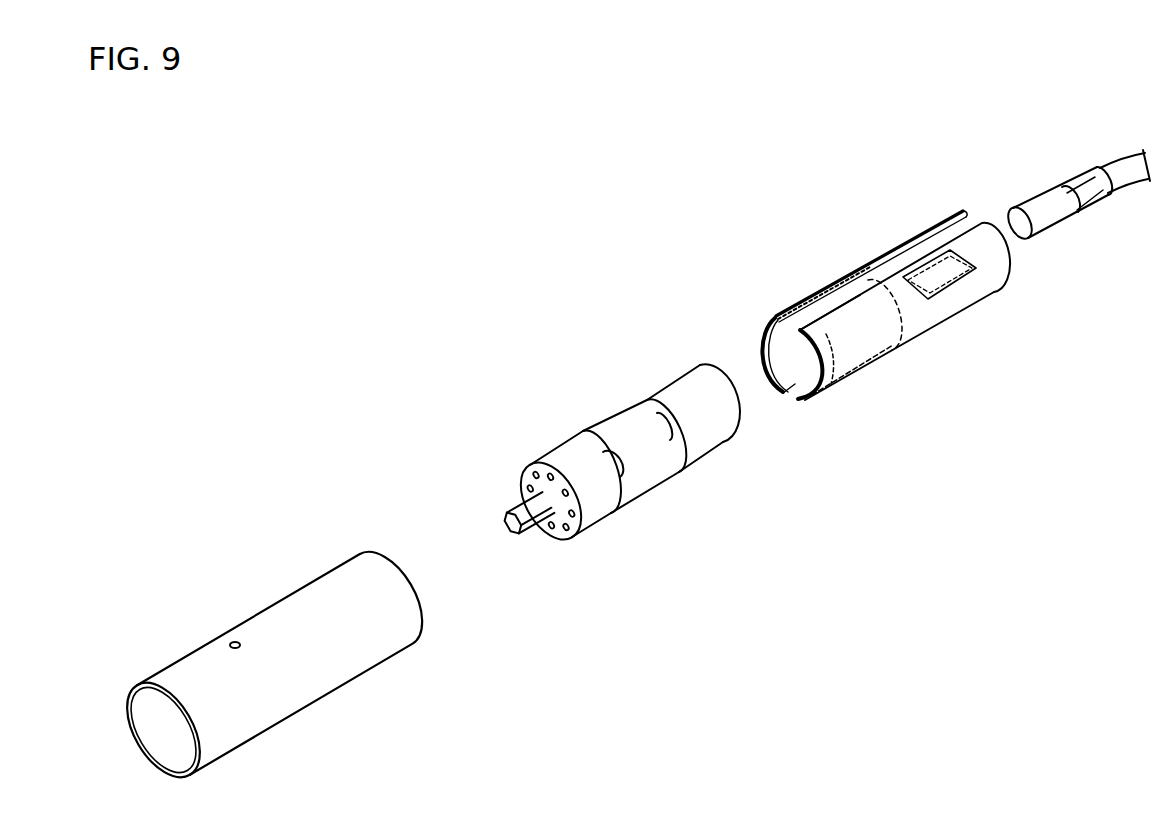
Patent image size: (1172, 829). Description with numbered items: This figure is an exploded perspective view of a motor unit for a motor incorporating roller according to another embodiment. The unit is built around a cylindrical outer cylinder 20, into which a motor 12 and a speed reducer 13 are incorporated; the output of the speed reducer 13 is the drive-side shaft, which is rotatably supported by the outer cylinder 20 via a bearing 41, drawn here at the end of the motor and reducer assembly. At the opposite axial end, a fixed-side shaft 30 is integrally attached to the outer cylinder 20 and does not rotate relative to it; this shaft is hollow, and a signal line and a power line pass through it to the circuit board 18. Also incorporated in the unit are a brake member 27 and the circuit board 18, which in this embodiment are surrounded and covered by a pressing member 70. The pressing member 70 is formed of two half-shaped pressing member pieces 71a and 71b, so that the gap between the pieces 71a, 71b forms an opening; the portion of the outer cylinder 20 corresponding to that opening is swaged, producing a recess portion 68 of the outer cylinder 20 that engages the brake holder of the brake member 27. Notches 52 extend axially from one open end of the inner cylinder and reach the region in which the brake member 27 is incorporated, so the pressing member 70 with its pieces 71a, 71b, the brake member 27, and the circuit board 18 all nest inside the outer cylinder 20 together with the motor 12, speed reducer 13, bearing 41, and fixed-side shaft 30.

The outer cylinder 20 is at (323, 587).
The recess portion 68 is at (235, 642).
The bearing 41 is at (592, 512).
The speed reducer 13 is at (657, 470).
The motor 12 is at (725, 428).
The brake member 27 is at (853, 355).
The notch 52 is at (818, 307).
The circuit board 18 is at (946, 262).
The pressing member 70 is at (907, 250).
The pressing member piece 71a is at (760, 334).
The pressing member piece 71b is at (807, 399).
The fixed-side shaft 30 is at (1042, 202).